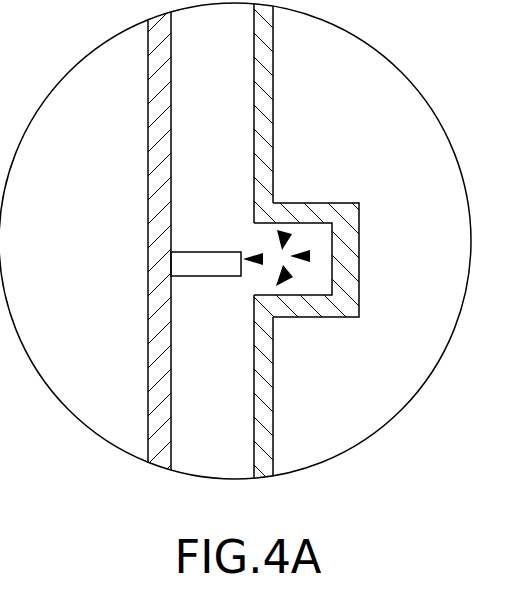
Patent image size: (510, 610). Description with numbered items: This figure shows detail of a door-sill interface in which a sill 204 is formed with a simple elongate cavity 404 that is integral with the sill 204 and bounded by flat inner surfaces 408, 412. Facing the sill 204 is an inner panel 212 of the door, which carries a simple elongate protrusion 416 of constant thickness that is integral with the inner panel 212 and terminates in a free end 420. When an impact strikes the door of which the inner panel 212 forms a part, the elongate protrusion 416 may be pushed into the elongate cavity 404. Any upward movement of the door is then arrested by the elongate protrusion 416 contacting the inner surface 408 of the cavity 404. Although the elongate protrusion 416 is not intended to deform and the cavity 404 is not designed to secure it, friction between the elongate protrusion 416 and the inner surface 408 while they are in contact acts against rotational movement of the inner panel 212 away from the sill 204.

The inner panel 212 is at (160, 50).
The sill 204 is at (260, 68).
The elongate cavity 404 is at (308, 256).
The inner surface 408 is at (287, 243).
The inner surface 412 is at (286, 269).
The elongate protrusion 416 is at (195, 260).
The free end 420 is at (262, 259).